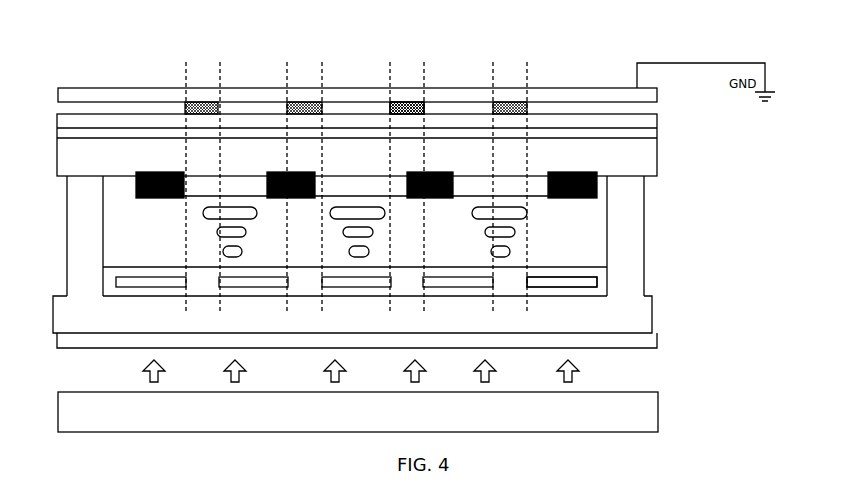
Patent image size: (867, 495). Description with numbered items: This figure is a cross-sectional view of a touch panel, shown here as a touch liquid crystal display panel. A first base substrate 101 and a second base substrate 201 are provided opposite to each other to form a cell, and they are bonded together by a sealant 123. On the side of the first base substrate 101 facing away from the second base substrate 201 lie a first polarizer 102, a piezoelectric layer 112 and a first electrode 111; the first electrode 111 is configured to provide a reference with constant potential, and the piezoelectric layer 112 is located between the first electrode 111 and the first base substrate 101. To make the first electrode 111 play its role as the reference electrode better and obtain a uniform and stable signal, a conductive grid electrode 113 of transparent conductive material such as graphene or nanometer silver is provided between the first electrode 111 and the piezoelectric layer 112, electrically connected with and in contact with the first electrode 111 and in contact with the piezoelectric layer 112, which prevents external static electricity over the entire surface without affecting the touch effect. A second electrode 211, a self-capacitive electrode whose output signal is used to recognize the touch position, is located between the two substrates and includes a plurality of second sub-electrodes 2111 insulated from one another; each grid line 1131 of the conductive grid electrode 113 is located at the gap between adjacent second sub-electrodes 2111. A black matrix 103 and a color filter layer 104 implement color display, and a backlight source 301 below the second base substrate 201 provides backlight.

The first base substrate 101 is at (618, 167).
The first polarizer 102 is at (93, 132).
The black matrix 103 is at (155, 175).
The color filter layer 104 is at (247, 188).
The first electrode 111 is at (577, 95).
The piezoelectric layer 112 is at (510, 120).
The conductive grid electrode 113 is at (405, 100).
The grid line 1131 is at (407, 108).
The sealant 123 is at (627, 272).
The second base substrate 201 is at (633, 319).
The second electrode 211 is at (535, 283).
The second sub-electrode 2111 is at (562, 282).
The backlight source 301 is at (618, 418).